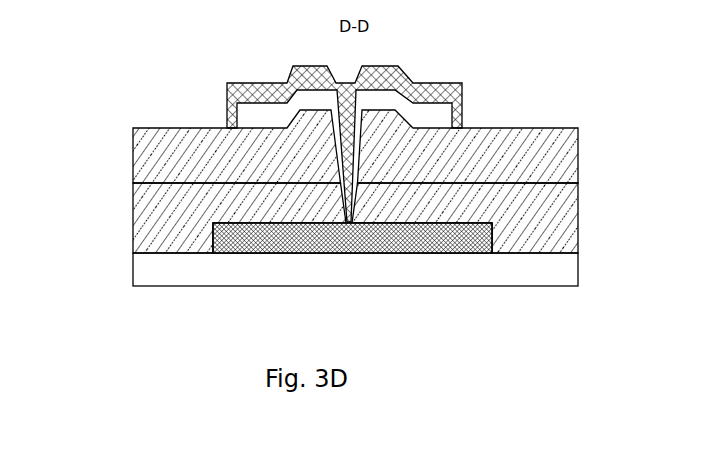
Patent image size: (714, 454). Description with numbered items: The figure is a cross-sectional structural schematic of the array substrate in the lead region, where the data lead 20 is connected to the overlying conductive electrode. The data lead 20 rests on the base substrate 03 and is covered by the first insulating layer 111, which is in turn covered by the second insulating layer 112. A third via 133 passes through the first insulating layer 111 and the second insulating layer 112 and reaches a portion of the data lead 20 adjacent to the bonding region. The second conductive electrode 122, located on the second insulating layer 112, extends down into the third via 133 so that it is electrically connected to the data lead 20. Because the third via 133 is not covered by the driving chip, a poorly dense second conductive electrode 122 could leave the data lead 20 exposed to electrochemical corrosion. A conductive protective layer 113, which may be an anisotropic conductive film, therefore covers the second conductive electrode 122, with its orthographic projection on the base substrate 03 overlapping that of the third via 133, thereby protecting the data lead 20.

The base substrate 03 is at (152, 273).
The data lead 20 is at (306, 250).
The first insulating layer 111 is at (140, 217).
The second insulating layer 112 is at (146, 150).
The conductive protective layer 113 is at (227, 90).
The second conductive electrode 122 is at (392, 64).
The third via 133 is at (415, 88).